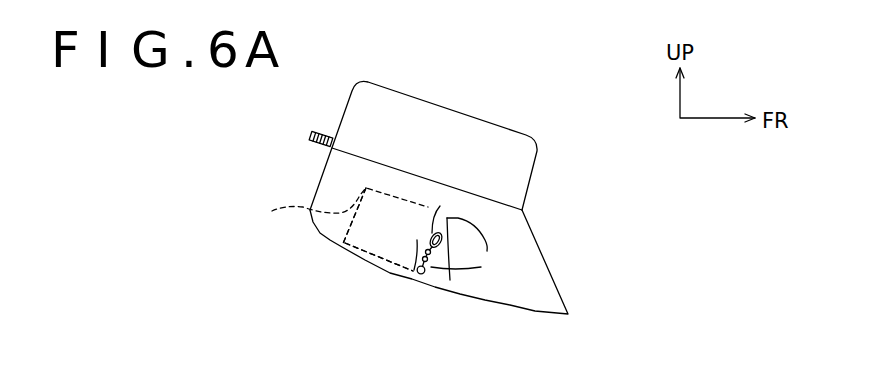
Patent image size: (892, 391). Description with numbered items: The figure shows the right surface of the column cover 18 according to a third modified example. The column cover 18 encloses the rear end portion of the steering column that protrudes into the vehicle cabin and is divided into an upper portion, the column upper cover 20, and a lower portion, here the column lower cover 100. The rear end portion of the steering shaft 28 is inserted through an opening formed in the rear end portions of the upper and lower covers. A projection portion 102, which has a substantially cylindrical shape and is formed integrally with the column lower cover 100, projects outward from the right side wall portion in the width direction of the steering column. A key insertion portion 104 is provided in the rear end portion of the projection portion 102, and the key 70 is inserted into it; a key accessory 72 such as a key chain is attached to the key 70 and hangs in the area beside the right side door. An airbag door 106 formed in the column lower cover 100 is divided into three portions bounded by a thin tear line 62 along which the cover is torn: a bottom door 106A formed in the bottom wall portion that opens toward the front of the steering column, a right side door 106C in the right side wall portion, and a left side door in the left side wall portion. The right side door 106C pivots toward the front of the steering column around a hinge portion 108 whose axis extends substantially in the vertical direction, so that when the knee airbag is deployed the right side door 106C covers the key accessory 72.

The column cover 18 is at (424, 218).
The column upper cover 20 is at (483, 113).
The steering shaft 28 is at (315, 132).
The tear line 62 is at (337, 207).
The key 70 is at (440, 206).
The key accessory 72 is at (422, 276).
The column lower cover 100 is at (540, 313).
The projection portion 102 is at (471, 250).
The key insertion portion 104 is at (450, 280).
The airbag door 106 is at (359, 270).
The bottom door 106A is at (375, 267).
The right side door 106C is at (358, 236).
The hinge portion 108 is at (414, 270).